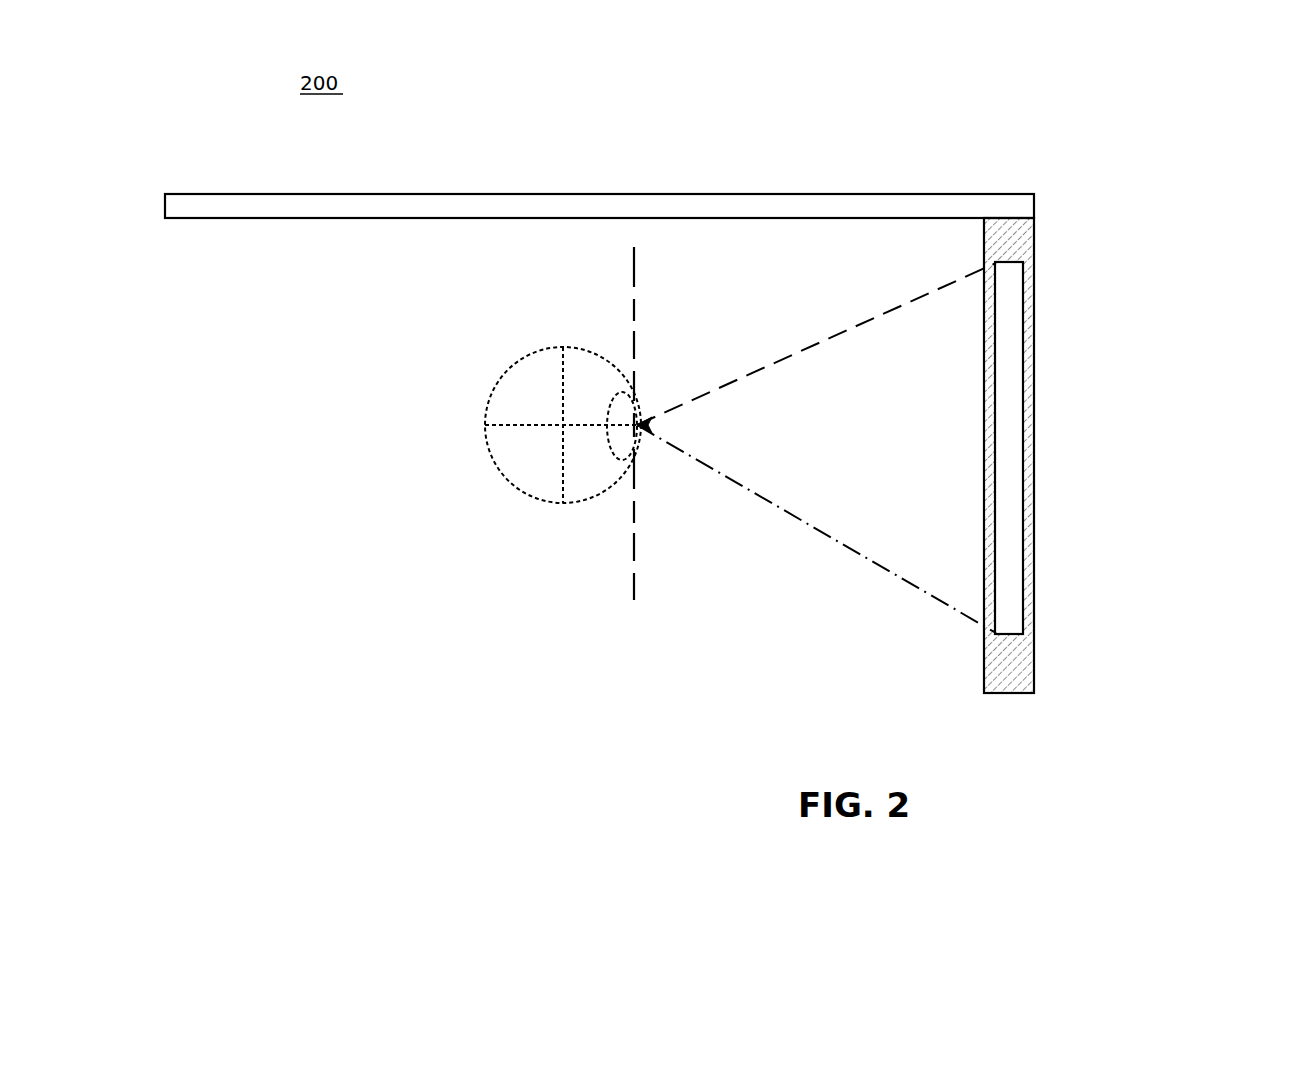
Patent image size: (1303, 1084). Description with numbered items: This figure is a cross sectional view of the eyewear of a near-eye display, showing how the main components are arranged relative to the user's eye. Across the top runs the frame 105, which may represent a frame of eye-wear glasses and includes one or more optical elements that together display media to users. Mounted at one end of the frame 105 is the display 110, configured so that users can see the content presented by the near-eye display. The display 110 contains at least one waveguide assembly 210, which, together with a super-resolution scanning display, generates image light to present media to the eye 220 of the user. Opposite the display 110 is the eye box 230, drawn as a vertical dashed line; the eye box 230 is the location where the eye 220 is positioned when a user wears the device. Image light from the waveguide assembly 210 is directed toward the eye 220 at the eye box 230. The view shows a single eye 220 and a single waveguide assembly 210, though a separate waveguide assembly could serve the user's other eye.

The frame 105 is at (830, 194).
The display 110 is at (1035, 577).
The waveguide assembly 210 is at (1010, 450).
The eye 220 is at (486, 425).
The eye box 230 is at (632, 527).